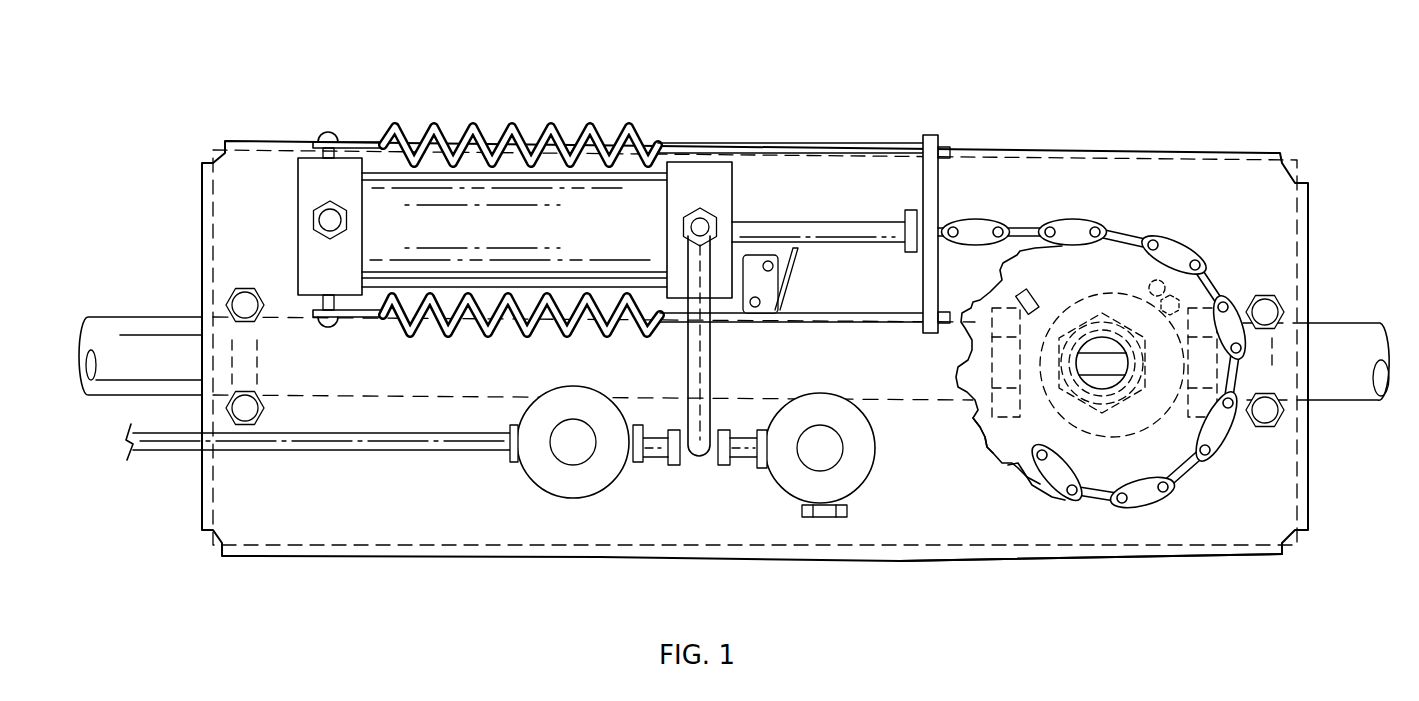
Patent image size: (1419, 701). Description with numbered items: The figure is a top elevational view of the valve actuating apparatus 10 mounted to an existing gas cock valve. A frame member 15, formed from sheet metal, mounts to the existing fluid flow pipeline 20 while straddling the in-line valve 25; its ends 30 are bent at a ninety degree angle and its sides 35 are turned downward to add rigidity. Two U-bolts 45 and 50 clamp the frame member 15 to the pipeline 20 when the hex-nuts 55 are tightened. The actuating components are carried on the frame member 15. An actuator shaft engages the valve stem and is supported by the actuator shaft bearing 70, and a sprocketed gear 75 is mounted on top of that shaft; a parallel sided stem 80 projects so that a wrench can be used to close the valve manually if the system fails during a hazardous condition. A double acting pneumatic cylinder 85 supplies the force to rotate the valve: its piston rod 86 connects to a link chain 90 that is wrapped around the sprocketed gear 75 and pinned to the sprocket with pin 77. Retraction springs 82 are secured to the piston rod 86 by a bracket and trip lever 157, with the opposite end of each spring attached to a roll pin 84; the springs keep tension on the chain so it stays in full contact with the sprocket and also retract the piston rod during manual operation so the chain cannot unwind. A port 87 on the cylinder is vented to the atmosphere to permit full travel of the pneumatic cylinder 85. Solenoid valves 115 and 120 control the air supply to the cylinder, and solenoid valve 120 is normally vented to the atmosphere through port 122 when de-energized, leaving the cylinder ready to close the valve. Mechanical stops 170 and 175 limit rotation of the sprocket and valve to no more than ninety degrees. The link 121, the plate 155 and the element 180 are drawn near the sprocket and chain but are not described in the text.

The valve actuating apparatus 10 is at (829, 143).
The frame member 15 is at (771, 142).
The fluid flow pipeline 20 is at (141, 330).
The in-line valve 25 is at (1118, 294).
The ends 30 is at (1308, 470).
The sides 35 is at (1017, 560).
The U-bolt 45 is at (1265, 377).
The U-bolt 50 is at (242, 340).
The hex-nuts 55 is at (245, 288).
The actuator shaft bearing 70 is at (1125, 392).
The sprocketed gear 75 is at (985, 453).
The pin 77 is at (1038, 457).
The parallel sided stem 80 is at (1098, 367).
The retraction springs 82 is at (555, 128).
The roll pin 84 is at (327, 132).
The double acting pneumatic cylinder 85 is at (457, 196).
The piston rod 86 is at (803, 226).
The port 87 is at (322, 208).
The link chain 90 is at (1162, 502).
The solenoid valve 115 is at (520, 483).
The solenoid valve 120 is at (877, 480).
The connecting link 121 is at (702, 470).
The port 122 is at (826, 519).
The latch plate 155 is at (770, 287).
The bracket and trip lever 157 is at (908, 212).
The mechanical stop 170 is at (1037, 298).
The mechanical stop 175 is at (1183, 303).
The bolt hole 180 is at (1164, 281).